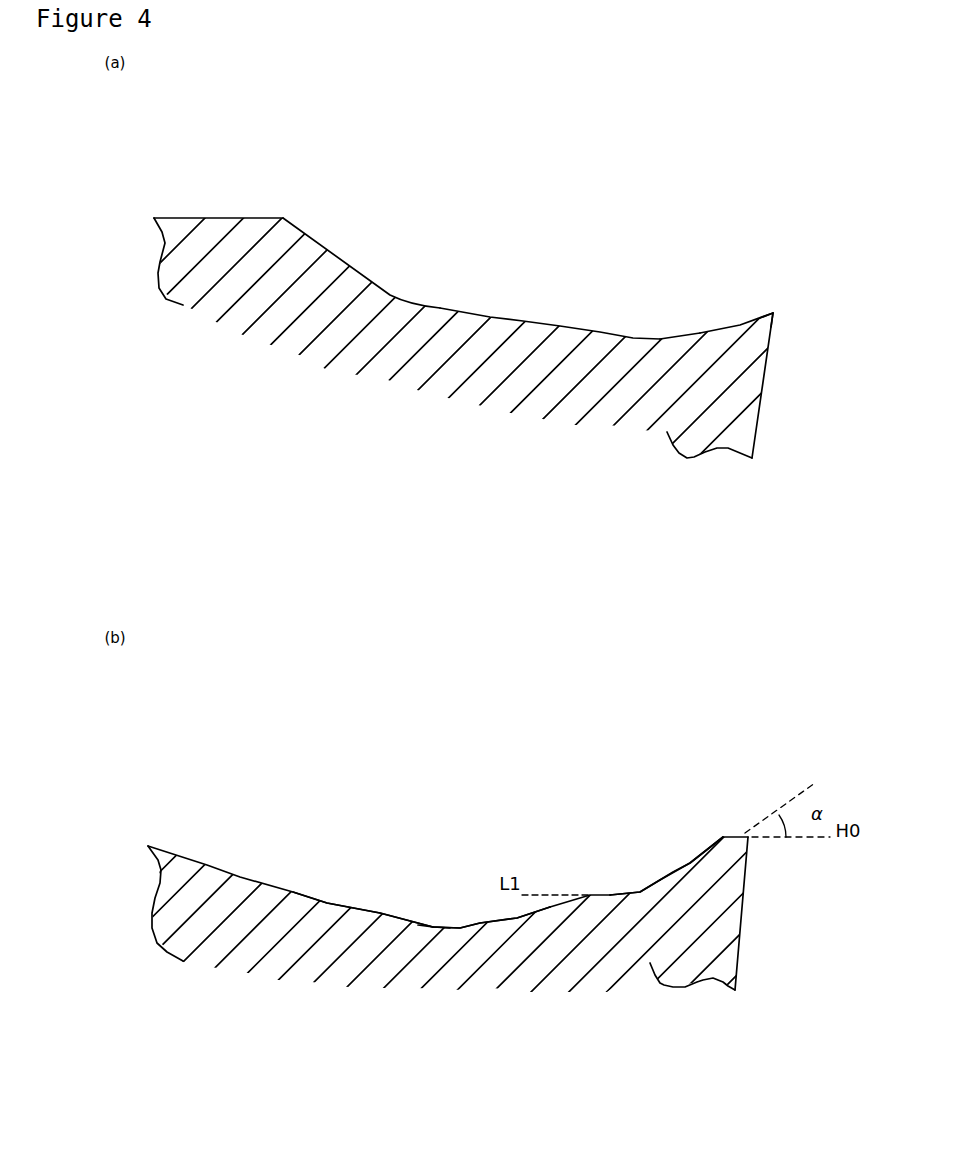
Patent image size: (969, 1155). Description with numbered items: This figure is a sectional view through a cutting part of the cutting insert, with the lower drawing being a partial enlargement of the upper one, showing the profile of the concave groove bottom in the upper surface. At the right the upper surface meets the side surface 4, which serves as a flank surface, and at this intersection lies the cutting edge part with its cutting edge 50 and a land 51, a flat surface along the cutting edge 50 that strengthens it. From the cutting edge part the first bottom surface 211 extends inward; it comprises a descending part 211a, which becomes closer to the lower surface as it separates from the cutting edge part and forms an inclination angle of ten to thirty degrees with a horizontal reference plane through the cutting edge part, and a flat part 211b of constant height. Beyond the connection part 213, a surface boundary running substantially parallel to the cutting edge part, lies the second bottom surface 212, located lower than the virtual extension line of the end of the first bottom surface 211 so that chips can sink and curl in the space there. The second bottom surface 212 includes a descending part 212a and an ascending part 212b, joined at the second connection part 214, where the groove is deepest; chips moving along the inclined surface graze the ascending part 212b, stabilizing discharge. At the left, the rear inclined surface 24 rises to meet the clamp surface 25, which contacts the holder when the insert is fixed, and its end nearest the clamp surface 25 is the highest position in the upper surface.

The side surface 4 is at (762, 392).
The rear inclined surface 24 is at (345, 263).
The clamp surface 25 is at (220, 217).
The cutting edge 50 is at (772, 318).
The land 51 is at (772, 313).
The first bottom surface 211 is at (742, 327).
The descending part 211a is at (690, 866).
The flat part 211b is at (610, 893).
The second bottom surface 212 is at (633, 345).
The descending part 212a is at (513, 915).
The ascending part 212b is at (380, 913).
The connection part 213 is at (700, 333).
The second connection part 214 is at (435, 928).